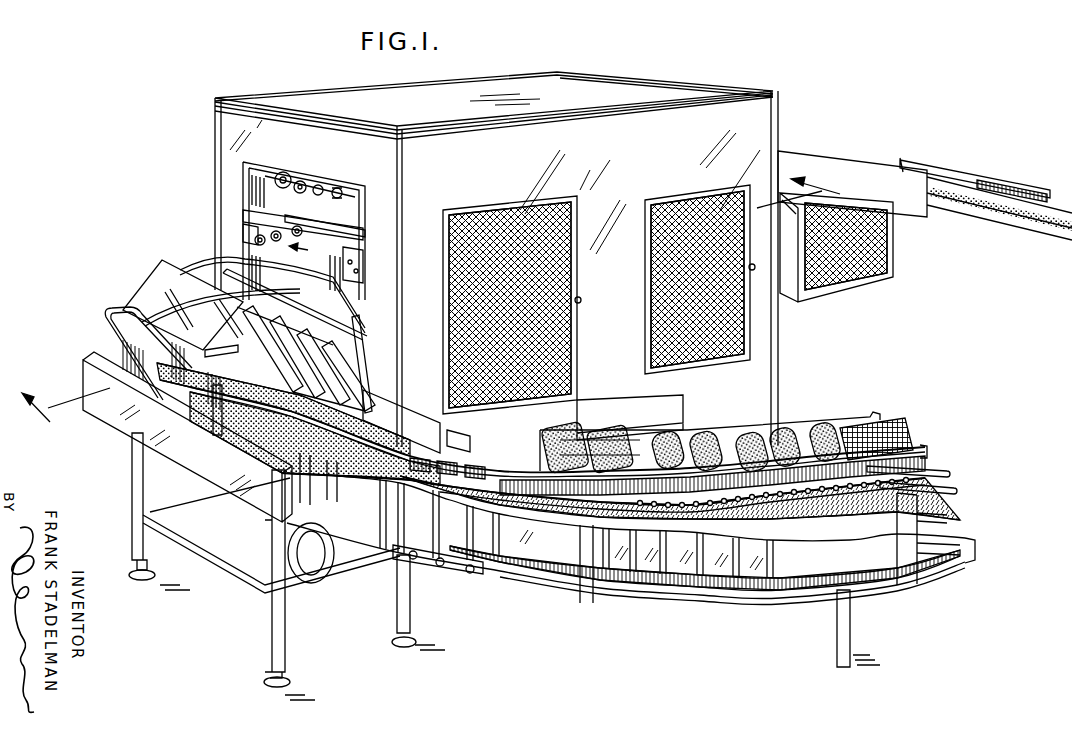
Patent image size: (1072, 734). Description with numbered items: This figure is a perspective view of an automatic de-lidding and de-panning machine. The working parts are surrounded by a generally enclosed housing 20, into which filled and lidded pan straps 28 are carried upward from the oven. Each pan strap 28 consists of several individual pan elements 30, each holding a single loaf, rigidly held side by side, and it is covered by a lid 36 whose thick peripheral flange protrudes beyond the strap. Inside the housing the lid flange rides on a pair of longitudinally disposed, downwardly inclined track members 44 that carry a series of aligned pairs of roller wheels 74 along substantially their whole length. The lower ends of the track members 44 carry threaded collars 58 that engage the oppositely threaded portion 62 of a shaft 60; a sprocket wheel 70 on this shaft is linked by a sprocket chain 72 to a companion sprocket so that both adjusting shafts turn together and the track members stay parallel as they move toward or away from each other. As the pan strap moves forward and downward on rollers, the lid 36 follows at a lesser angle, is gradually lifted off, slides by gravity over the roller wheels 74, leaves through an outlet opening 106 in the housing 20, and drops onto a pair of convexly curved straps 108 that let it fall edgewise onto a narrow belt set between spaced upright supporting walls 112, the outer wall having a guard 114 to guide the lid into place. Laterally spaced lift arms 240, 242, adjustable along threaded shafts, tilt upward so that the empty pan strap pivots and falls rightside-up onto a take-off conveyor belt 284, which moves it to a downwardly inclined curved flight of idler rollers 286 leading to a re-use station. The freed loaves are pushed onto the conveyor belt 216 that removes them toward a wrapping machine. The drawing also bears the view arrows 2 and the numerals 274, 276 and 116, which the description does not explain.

The housing 20 is at (757, 147).
The section line 2 is at (439, 308).
The outlet opening 106 is at (243, 172).
The sprocket chain 72 is at (283, 172).
The sprocket wheel 70 is at (299, 181).
The threaded collars 58 is at (319, 185).
The oppositely threaded portion 62 is at (337, 188).
The shaft 60 is at (352, 212).
The lid 36 is at (353, 218).
The track members 44 is at (243, 224).
The roller wheels 74 is at (278, 231).
The lift arm 240 is at (316, 251).
The convexly curved straps 108 is at (217, 255).
The guard 114 is at (108, 305).
The upright supporting walls 112 is at (120, 403).
The take-off conveyor belt 284 is at (253, 432).
The lift arm 242 is at (327, 305).
The guide rods 274 is at (262, 301).
The post 276 is at (357, 347).
The pan strap 28 is at (328, 383).
The pan elements 30 is at (290, 326).
The idler rollers 286 is at (481, 472).
The conveyor belt 216 is at (700, 437).
The motor bracket 116 is at (472, 565).